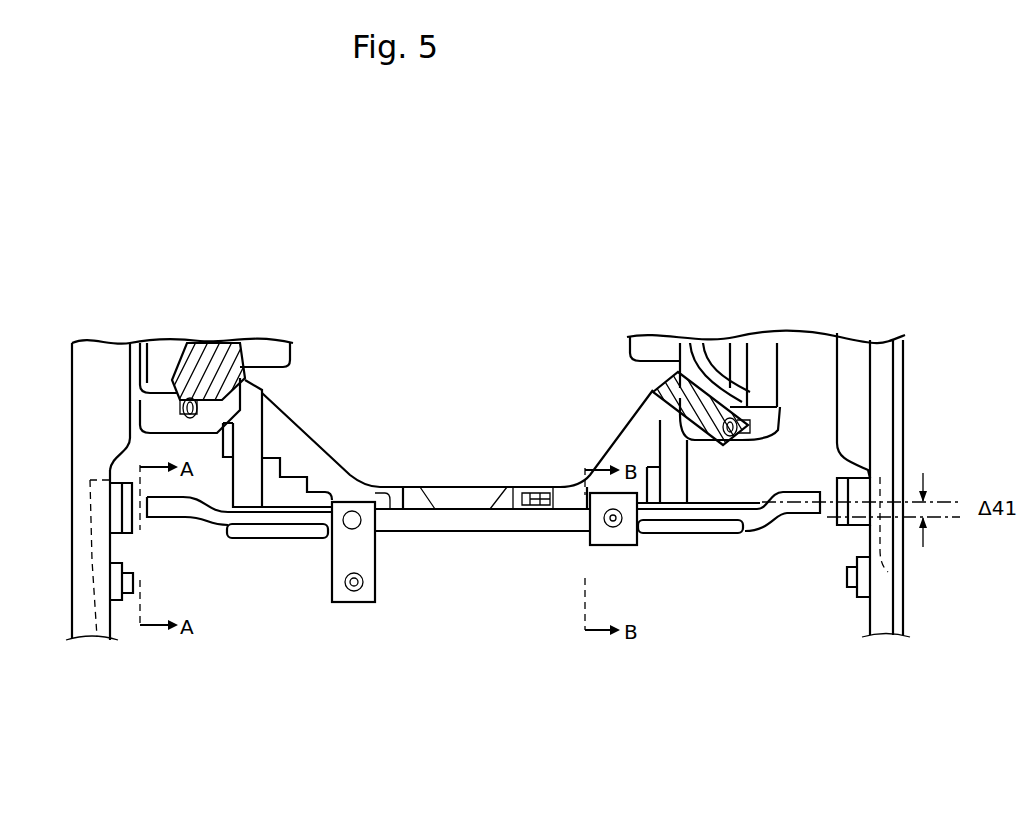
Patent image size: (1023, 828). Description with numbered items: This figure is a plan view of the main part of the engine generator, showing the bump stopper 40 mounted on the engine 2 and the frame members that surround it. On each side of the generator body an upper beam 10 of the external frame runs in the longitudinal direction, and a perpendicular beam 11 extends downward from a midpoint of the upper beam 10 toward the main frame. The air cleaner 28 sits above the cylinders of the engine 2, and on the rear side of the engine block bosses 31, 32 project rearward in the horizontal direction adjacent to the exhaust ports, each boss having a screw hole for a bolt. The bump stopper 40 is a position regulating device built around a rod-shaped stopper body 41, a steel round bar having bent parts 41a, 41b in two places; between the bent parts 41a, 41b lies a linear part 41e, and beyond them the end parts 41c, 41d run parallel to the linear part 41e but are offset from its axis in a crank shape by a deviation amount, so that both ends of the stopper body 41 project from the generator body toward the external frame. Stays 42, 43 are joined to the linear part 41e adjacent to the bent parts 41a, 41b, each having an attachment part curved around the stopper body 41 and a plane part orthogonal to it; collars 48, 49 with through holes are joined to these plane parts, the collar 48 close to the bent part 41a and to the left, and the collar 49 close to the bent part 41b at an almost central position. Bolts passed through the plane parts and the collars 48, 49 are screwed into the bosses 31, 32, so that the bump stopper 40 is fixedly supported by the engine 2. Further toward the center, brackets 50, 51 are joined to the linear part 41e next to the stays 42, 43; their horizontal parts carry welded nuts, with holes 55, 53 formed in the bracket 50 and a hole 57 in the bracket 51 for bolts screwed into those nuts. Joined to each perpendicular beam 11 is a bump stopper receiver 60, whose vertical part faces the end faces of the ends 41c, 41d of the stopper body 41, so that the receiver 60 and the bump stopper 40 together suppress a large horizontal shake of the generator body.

The engine 2 is at (718, 355).
The upper beam 10 is at (103, 363).
The perpendicular beam 11 is at (87, 637).
The air cleaner 28 is at (537, 397).
The boss 31 is at (250, 440).
The boss 32 is at (670, 453).
The bump stopper 40 is at (470, 541).
The stopper body 41 is at (520, 527).
The bent part 41a is at (210, 530).
The bent part 41b is at (760, 508).
The end part 41c is at (157, 517).
The end part 41d is at (805, 497).
The linear part 41e is at (393, 527).
The stay 42 is at (293, 537).
The stay 43 is at (700, 523).
The collar 48 is at (250, 483).
The collar 49 is at (683, 497).
The bracket 50 is at (372, 593).
The bracket 51 is at (630, 530).
The hole 53 is at (355, 591).
The hole 55 is at (352, 511).
The hole 57 is at (613, 527).
The bump stopper receiver 60 is at (124, 487).